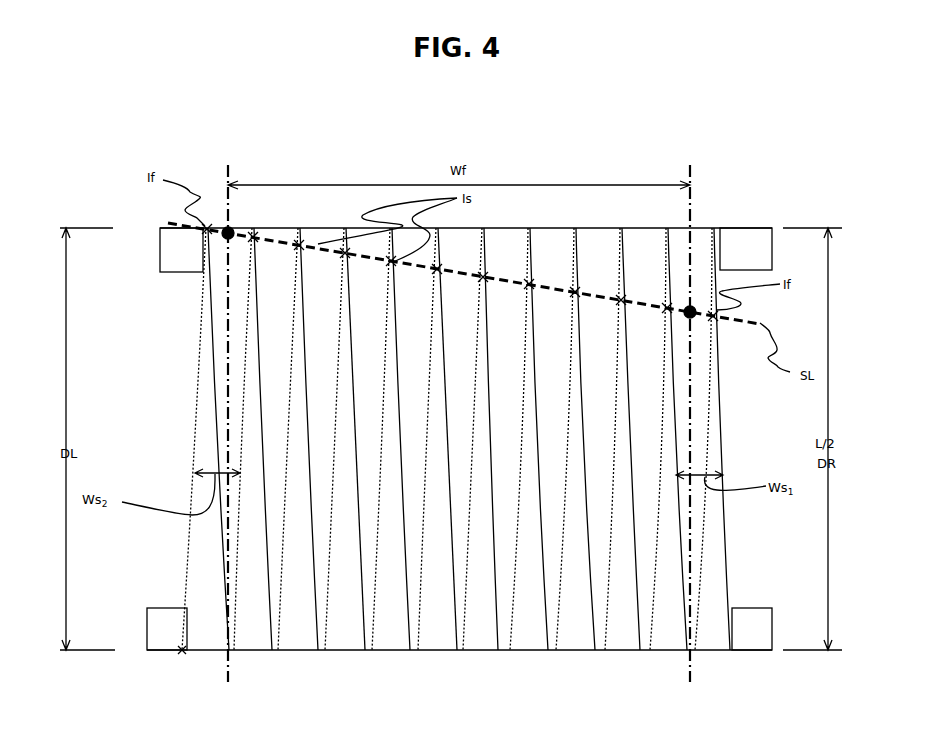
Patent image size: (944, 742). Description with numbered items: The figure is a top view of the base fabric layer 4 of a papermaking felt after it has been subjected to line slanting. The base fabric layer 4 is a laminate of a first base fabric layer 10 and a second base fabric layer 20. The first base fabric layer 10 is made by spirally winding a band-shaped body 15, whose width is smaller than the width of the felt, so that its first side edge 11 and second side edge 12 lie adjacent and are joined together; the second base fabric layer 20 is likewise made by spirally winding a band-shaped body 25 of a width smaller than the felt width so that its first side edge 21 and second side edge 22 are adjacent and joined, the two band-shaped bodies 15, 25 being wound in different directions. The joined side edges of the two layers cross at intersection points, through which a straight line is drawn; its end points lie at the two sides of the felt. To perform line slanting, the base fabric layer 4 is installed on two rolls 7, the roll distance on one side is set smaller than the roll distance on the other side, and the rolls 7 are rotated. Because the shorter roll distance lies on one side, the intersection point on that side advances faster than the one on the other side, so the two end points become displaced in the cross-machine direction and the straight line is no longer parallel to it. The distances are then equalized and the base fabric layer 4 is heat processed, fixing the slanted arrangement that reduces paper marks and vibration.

The base fabric layer 4 is at (717, 197).
The roll 7 is at (170, 248).
The first base fabric layer 10 is at (752, 439).
The band-shaped body 15 is at (710, 588).
The second base fabric layer 20 is at (165, 437).
The band-shaped body 25 is at (205, 432).
The first side edge 11 is at (588, 547).
The second side edge 12 is at (543, 547).
The first side edge 21 is at (467, 563).
The second side edge 22 is at (515, 563).